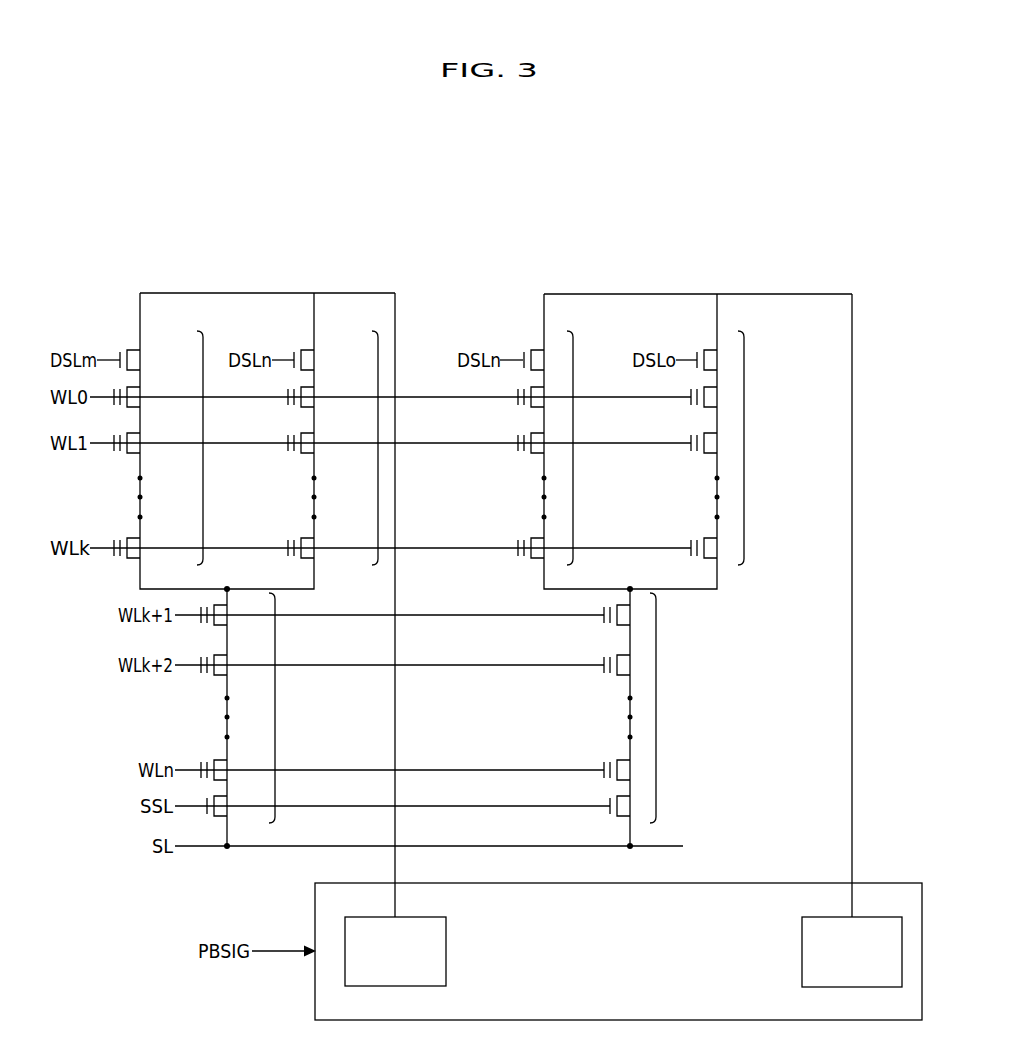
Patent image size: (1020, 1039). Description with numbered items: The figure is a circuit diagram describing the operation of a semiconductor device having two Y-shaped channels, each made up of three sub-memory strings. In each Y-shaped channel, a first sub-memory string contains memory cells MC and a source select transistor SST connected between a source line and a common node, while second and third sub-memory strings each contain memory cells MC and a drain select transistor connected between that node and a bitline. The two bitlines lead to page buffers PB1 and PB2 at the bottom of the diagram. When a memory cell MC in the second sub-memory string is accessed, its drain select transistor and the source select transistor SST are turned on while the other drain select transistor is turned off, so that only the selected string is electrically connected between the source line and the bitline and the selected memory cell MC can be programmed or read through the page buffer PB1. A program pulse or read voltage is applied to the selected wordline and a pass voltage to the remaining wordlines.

The memory cells MC is at (133, 391).
The source select transistor SST is at (221, 802).
The page buffer PB1 is at (395, 951).
The page buffer PB2 is at (852, 952).